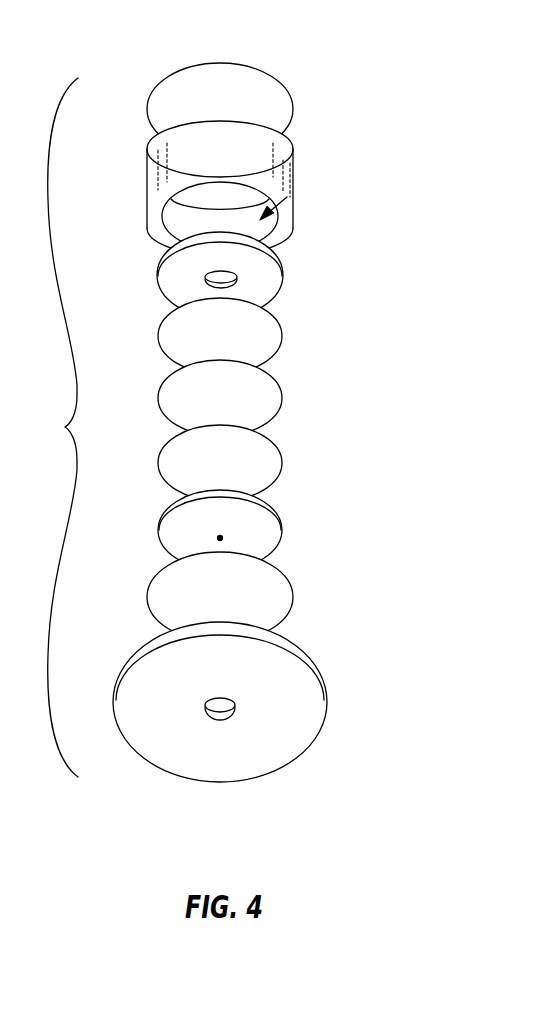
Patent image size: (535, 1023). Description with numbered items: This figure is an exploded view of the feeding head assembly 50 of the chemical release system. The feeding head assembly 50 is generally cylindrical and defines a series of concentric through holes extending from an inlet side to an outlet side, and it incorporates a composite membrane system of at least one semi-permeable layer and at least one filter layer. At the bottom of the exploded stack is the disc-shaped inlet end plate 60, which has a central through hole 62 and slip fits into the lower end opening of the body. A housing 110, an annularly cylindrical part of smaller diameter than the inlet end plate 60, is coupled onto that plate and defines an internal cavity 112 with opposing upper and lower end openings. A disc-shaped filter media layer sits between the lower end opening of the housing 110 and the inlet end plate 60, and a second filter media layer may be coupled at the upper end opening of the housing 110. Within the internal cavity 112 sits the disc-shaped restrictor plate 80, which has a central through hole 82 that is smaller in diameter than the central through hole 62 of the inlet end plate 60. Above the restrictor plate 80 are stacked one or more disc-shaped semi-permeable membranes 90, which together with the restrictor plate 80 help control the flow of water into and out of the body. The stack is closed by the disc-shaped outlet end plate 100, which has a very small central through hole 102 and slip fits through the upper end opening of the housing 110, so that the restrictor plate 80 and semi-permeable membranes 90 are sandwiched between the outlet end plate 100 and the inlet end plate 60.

The feeding head assembly 50 is at (58, 427).
The inlet end plate 60 is at (305, 752).
The central through hole 62 is at (236, 702).
The restrictor plate 80 is at (282, 540).
The central through hole 82 is at (222, 536).
The semi-permeable membrane 90 is at (283, 345).
The outlet end plate 100 is at (281, 290).
The central through hole 102 is at (238, 277).
The housing 110 is at (293, 160).
The internal cavity 112 is at (287, 197).